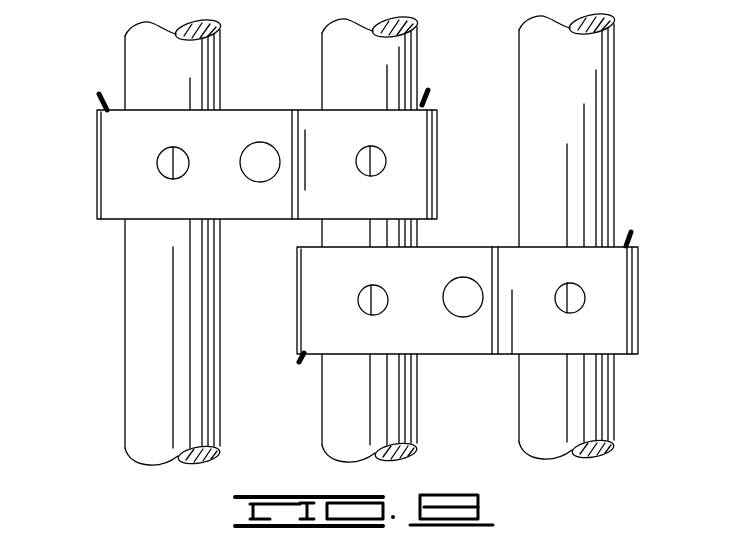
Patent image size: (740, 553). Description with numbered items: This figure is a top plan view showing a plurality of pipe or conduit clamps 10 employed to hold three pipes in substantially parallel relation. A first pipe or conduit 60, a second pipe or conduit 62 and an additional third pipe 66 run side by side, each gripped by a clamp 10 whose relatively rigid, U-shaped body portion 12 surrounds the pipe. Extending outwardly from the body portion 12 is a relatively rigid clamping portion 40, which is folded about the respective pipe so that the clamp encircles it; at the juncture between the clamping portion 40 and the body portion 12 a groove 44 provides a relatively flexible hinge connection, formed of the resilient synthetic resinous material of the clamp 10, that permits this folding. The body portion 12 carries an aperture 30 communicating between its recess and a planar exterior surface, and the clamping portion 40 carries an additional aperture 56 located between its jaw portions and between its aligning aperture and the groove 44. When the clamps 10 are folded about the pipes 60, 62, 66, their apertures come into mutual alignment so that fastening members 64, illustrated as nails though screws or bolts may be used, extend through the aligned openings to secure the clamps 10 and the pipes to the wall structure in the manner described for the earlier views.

The clamp 10 is at (112, 120).
The body portion 12 is at (413, 128).
The aperture 30 is at (363, 153).
The clamping portion 40 is at (227, 207).
The groove 44 is at (97, 152).
The aperture 56 is at (177, 160).
The pipe or conduit 60 is at (593, 100).
The pipe or conduit 62 is at (403, 53).
The fastening member 64 is at (255, 147).
The third pipe 66 is at (204, 55).